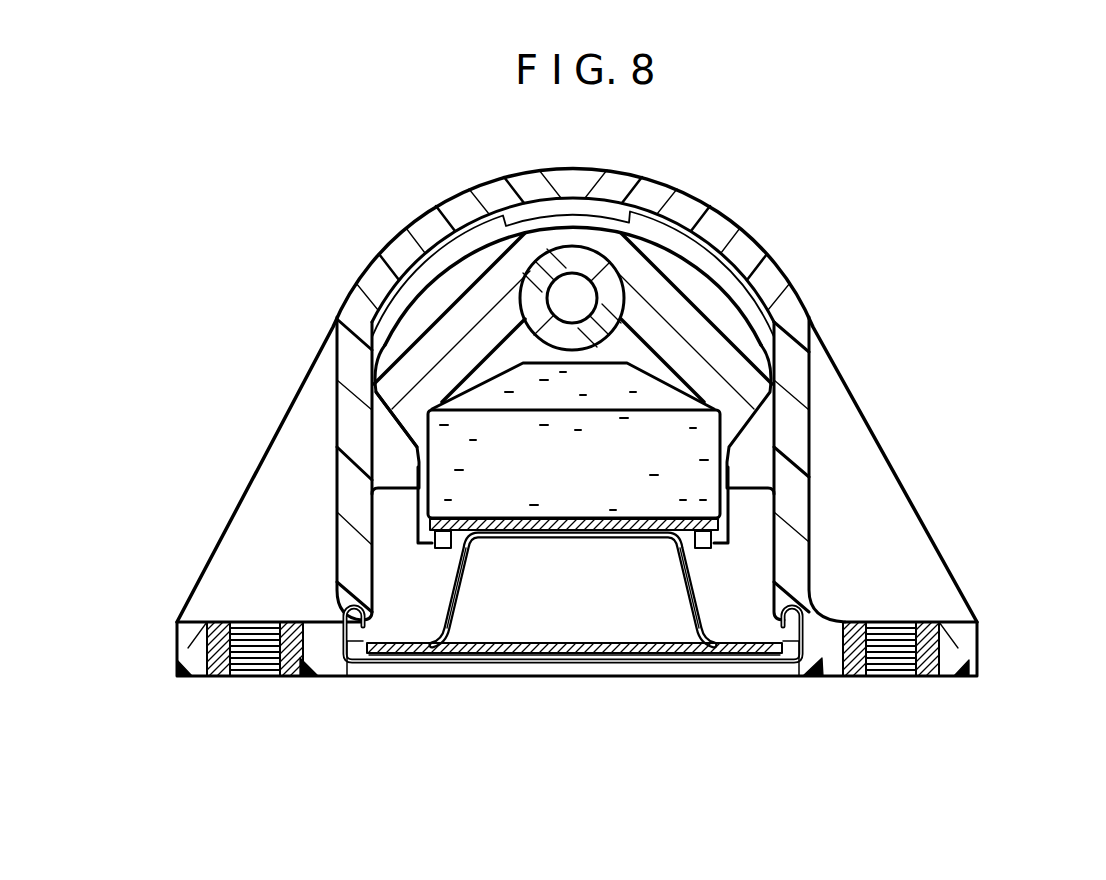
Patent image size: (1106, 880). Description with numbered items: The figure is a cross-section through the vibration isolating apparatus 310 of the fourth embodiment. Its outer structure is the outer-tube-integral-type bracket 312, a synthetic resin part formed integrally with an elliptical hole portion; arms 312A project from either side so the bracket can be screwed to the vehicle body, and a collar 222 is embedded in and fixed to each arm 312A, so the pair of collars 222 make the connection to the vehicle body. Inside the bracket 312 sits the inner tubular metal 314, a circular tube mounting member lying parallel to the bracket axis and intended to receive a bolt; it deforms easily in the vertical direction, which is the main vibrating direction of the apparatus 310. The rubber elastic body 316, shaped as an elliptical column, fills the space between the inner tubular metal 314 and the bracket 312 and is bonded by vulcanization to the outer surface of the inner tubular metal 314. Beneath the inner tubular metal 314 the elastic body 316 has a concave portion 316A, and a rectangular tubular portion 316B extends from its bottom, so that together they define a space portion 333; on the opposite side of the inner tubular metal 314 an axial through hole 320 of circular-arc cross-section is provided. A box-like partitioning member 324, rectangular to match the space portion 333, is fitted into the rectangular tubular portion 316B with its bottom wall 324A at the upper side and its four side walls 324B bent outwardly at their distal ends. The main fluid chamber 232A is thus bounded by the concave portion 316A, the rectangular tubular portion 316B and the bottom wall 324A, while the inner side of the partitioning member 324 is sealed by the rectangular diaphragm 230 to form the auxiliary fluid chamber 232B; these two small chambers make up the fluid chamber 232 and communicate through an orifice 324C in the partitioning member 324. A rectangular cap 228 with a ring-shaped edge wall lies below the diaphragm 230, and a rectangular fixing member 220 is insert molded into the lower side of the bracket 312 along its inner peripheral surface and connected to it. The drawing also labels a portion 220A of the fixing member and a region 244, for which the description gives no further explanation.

The vibration isolating apparatus 310 is at (889, 233).
The outer-tube-integral-type bracket 312 is at (817, 427).
The arms 312A is at (190, 636).
The inner tubular metal 314 is at (533, 283).
The rubber elastic body 316 is at (710, 370).
The concave portion 316A is at (682, 461).
The rectangular tubular portion 316B is at (336, 407).
The through hole 320 is at (726, 287).
The space portion 333 is at (817, 457).
The collar 222 is at (287, 677).
The fixing member 220 is at (363, 648).
The upturned plate end 220A is at (318, 626).
The cap 228 is at (507, 654).
The diaphragm 230 is at (653, 580).
The fluid chamber 232 is at (656, 507).
The main fluid chamber 232A is at (600, 474).
The auxiliary fluid chamber 232B is at (468, 572).
The cavity 244 is at (605, 613).
The partitioning member 324 is at (477, 513).
The bottom wall 324A is at (577, 513).
The side walls 324B is at (489, 588).
The orifice 324C is at (660, 655).